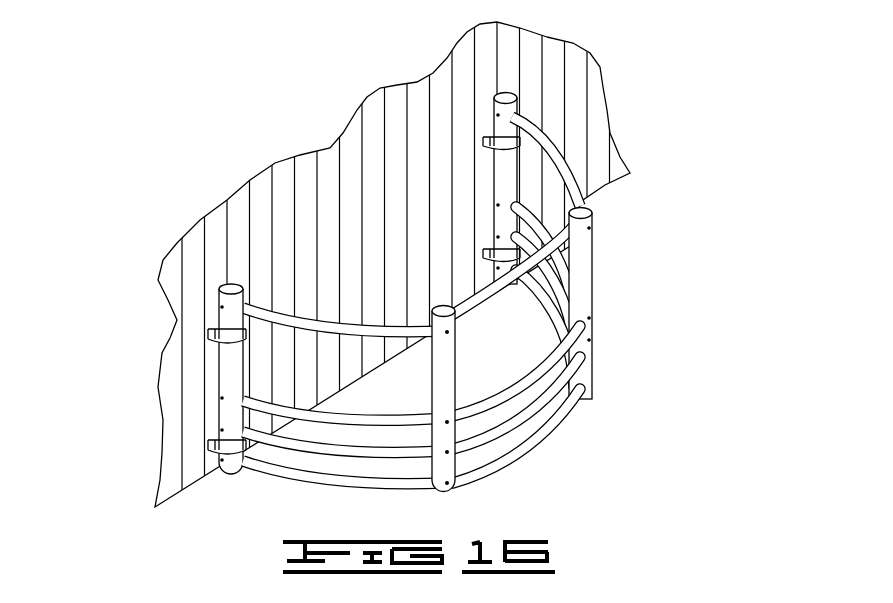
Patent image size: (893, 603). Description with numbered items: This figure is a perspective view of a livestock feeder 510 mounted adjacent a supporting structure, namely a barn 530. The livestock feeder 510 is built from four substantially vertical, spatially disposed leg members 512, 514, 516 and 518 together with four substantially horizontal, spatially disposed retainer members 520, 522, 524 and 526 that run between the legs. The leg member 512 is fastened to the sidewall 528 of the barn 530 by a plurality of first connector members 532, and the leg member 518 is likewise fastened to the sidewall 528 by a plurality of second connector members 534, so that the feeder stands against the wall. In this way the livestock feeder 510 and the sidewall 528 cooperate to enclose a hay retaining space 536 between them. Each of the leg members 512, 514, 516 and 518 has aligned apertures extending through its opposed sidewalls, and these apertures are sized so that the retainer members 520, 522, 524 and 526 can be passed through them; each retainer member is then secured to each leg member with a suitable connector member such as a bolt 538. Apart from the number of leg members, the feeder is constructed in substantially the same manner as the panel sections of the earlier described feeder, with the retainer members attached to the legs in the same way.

The livestock feeder 510 is at (614, 203).
The leg member 512 is at (213, 383).
The leg member 514 is at (461, 384).
The leg member 516 is at (598, 262).
The leg member 518 is at (490, 195).
The retainer member 520 is at (530, 281).
The retainer member 522 is at (582, 333).
The retainer member 524 is at (562, 393).
The retainer member 526 is at (533, 440).
The sidewall 528 is at (207, 267).
The barn 530 is at (668, 122).
The first connector members 532 is at (214, 334).
The second connector members 534 is at (488, 137).
The hay retaining space 536 is at (357, 405).
The bolt 538 is at (446, 334).